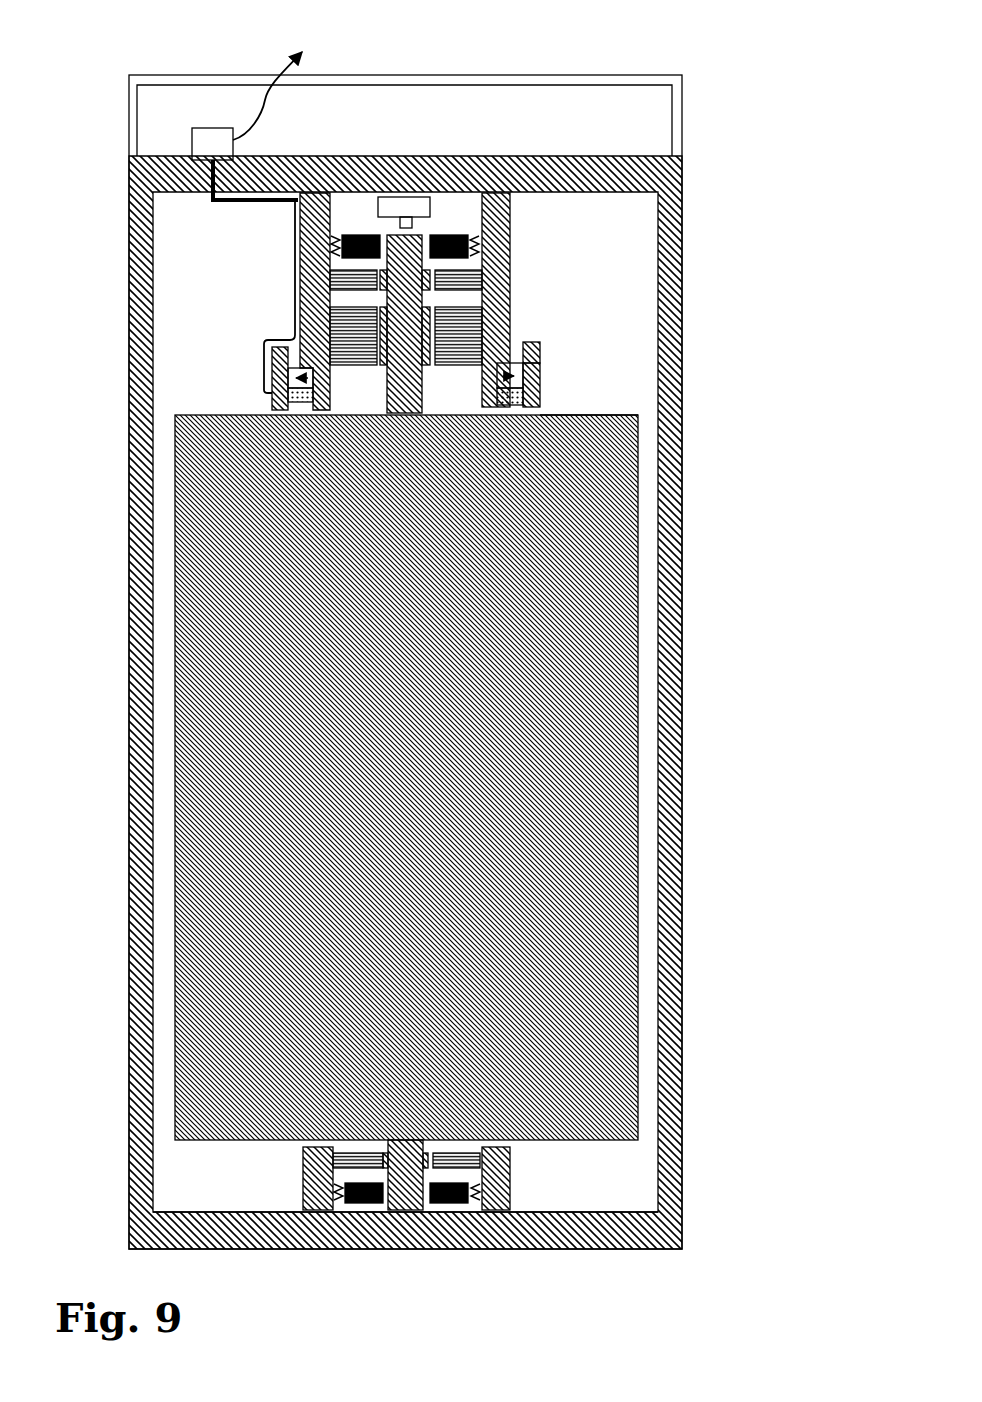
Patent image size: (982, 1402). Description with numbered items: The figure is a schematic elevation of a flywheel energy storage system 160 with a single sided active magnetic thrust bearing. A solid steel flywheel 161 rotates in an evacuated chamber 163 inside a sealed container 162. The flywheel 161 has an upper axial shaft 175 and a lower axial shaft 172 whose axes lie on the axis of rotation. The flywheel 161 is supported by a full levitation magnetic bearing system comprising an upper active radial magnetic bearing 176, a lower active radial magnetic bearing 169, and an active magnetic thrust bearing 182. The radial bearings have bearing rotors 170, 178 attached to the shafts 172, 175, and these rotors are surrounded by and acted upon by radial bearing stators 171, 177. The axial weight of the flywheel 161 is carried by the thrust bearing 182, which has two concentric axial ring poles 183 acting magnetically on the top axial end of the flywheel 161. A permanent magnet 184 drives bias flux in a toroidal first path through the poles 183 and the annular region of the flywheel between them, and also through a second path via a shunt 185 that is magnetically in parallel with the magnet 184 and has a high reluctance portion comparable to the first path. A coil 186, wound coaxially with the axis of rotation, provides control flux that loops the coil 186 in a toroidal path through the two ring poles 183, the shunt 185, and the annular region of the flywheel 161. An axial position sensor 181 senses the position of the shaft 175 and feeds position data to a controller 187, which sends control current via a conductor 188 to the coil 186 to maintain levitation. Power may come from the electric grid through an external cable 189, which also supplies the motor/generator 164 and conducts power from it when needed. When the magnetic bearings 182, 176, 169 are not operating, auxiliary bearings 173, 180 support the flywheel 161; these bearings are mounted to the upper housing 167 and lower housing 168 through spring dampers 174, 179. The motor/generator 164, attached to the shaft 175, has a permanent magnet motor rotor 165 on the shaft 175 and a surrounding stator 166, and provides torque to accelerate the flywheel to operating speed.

The flywheel energy storage system 160 is at (110, 104).
The flywheel 161 is at (640, 548).
The sealed container 162 is at (680, 837).
The evacuated chamber 163 is at (646, 1172).
The motor/generator 164 is at (450, 386).
The permanent magnet motor rotor 165 is at (377, 367).
The stator 166 is at (357, 367).
The upper housing 167 is at (510, 222).
The lower housing 168 is at (510, 1170).
The lower active radial magnetic bearing 169 is at (448, 1137).
The bearing rotor 170 is at (380, 1150).
The radial bearing stator 171 is at (350, 1150).
The lower axial shaft 172 is at (412, 1205).
The auxiliary bearing 173 is at (457, 1205).
The spring damper 174 is at (340, 1205).
The upper axial shaft 175 is at (430, 232).
The upper active radial magnetic bearing 176 is at (445, 293).
The radial bearing stator 177 is at (475, 262).
The bearing rotor 178 is at (380, 293).
The spring damper 179 is at (302, 222).
The auxiliary bearing 180 is at (358, 235).
The axial position sensor 181 is at (388, 197).
The active magnetic thrust bearing 182 is at (550, 406).
The axial ring poles 183 is at (490, 407).
The permanent magnet 184 is at (525, 370).
The shunt 185 is at (520, 348).
The coil 186 is at (302, 410).
The controller 187 is at (212, 133).
The conductor 188 is at (272, 373).
The external cable 189 is at (305, 48).